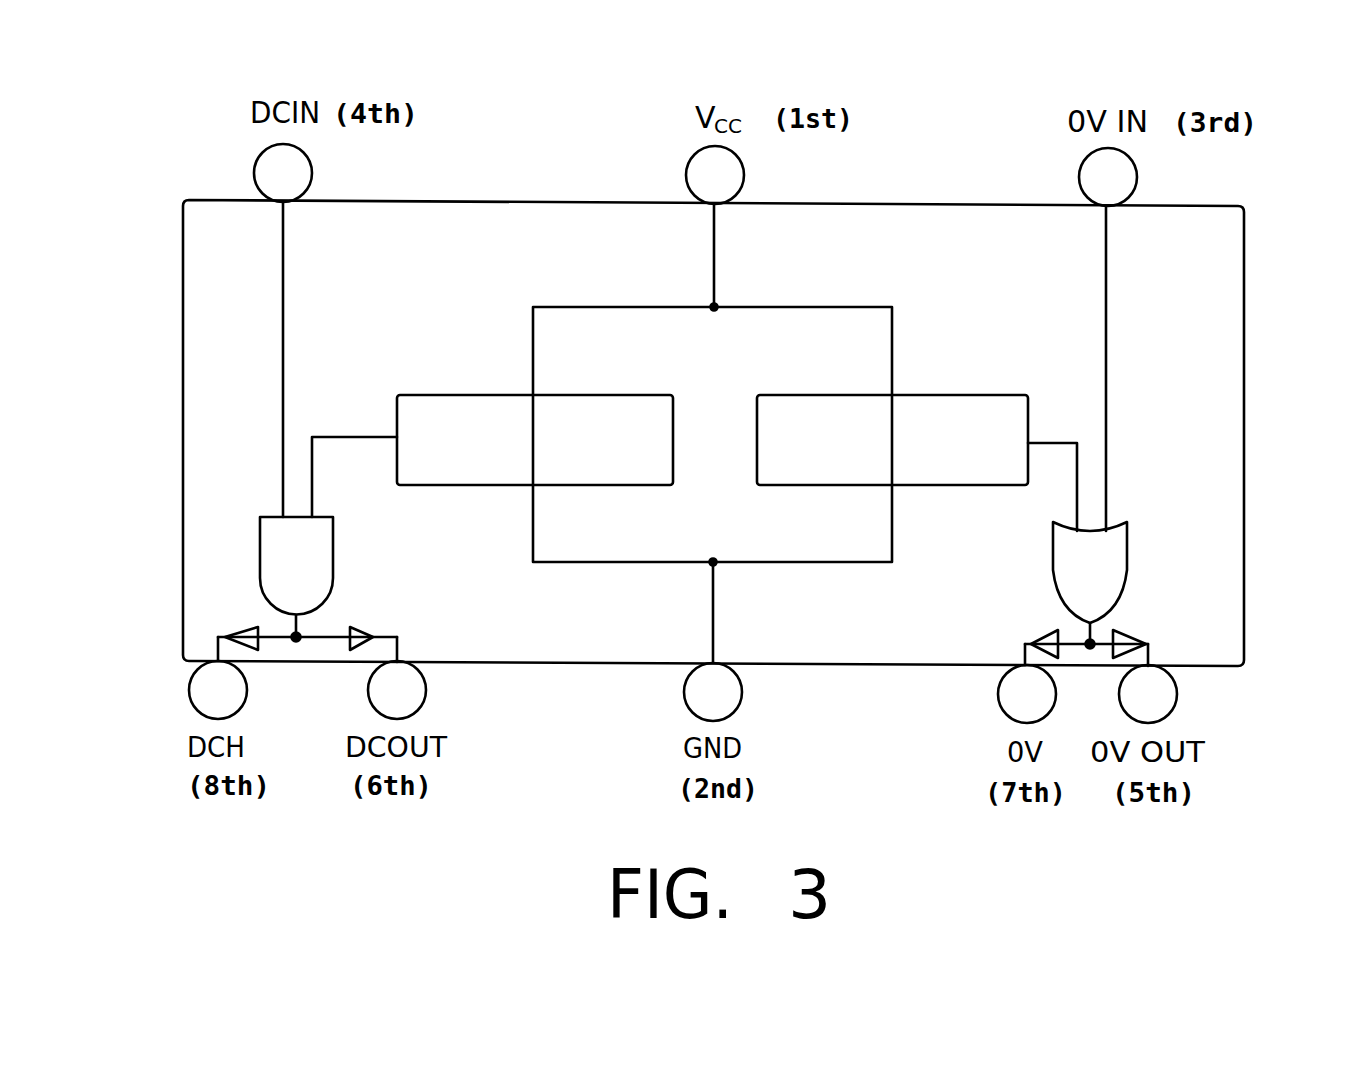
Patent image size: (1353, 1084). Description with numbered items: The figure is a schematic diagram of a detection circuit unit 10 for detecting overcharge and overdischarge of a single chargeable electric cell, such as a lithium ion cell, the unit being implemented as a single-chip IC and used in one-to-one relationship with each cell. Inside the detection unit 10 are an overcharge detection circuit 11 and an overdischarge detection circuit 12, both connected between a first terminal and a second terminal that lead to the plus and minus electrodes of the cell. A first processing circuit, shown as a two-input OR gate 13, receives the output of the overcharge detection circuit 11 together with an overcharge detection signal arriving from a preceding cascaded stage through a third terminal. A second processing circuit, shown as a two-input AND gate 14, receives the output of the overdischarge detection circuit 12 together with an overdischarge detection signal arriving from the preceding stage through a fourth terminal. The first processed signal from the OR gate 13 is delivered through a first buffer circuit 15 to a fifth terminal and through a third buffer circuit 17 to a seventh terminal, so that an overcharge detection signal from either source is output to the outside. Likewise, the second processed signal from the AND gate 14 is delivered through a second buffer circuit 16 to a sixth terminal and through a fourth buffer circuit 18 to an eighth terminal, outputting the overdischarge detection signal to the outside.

The detection circuit unit 10 is at (1245, 333).
The overcharge detection circuit 11 is at (997, 393).
The overdischarge detection circuit 12 is at (440, 393).
The two-input OR gate 13 is at (1127, 568).
The two-input AND gate 14 is at (333, 560).
The first buffer circuit 15 is at (1140, 632).
The second buffer circuit 16 is at (366, 626).
The third buffer circuit 17 is at (1036, 635).
The fourth buffer circuit 18 is at (238, 629).